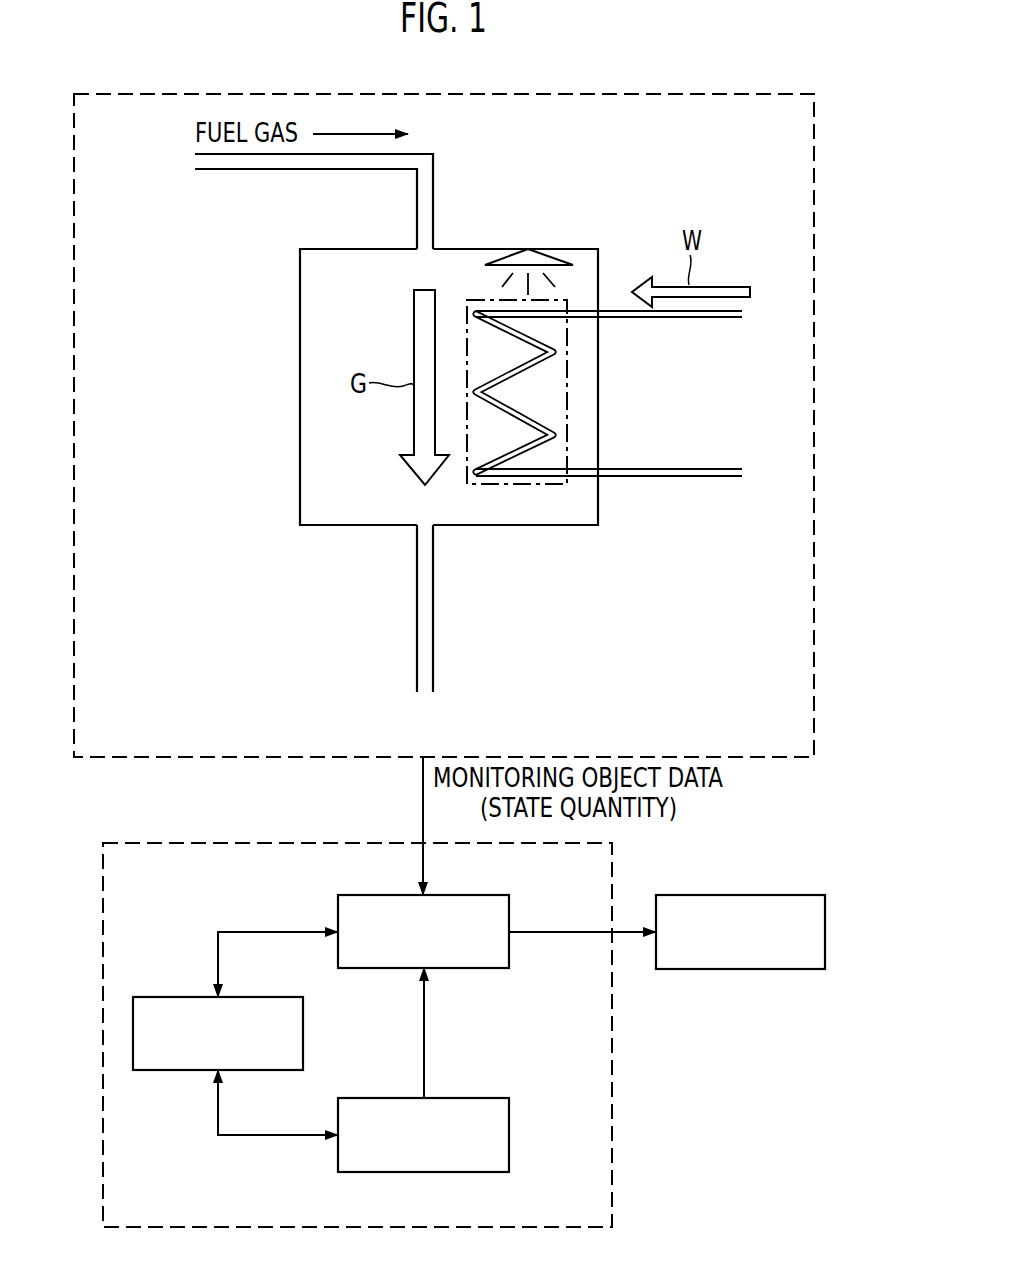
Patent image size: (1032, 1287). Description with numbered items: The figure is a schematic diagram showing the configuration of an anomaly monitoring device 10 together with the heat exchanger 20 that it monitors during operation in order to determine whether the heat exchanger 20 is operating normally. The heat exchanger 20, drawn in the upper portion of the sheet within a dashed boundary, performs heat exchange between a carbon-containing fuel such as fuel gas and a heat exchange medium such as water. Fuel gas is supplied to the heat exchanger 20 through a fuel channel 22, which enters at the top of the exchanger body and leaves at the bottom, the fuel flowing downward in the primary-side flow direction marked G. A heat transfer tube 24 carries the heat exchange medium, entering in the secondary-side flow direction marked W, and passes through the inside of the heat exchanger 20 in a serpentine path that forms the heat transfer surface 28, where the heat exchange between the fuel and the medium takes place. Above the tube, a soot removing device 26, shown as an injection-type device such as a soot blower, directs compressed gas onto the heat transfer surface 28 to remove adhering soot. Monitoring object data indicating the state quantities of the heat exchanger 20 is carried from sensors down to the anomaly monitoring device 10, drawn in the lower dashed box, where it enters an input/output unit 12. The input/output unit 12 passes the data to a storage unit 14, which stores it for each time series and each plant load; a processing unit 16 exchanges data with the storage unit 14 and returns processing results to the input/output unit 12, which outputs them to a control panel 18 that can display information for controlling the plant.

The anomaly monitoring device 10 is at (612, 1143).
The input/output unit 12 is at (476, 970).
The storage unit 14 is at (303, 1032).
The processing unit 16 is at (509, 1135).
The control panel 18 is at (792, 970).
The heat exchanger 20 is at (814, 236).
The fuel channel 22 is at (433, 193).
The heat transfer tube 24 is at (693, 318).
The soot removing device 26 is at (550, 257).
The heat transfer surface 28 is at (530, 487).